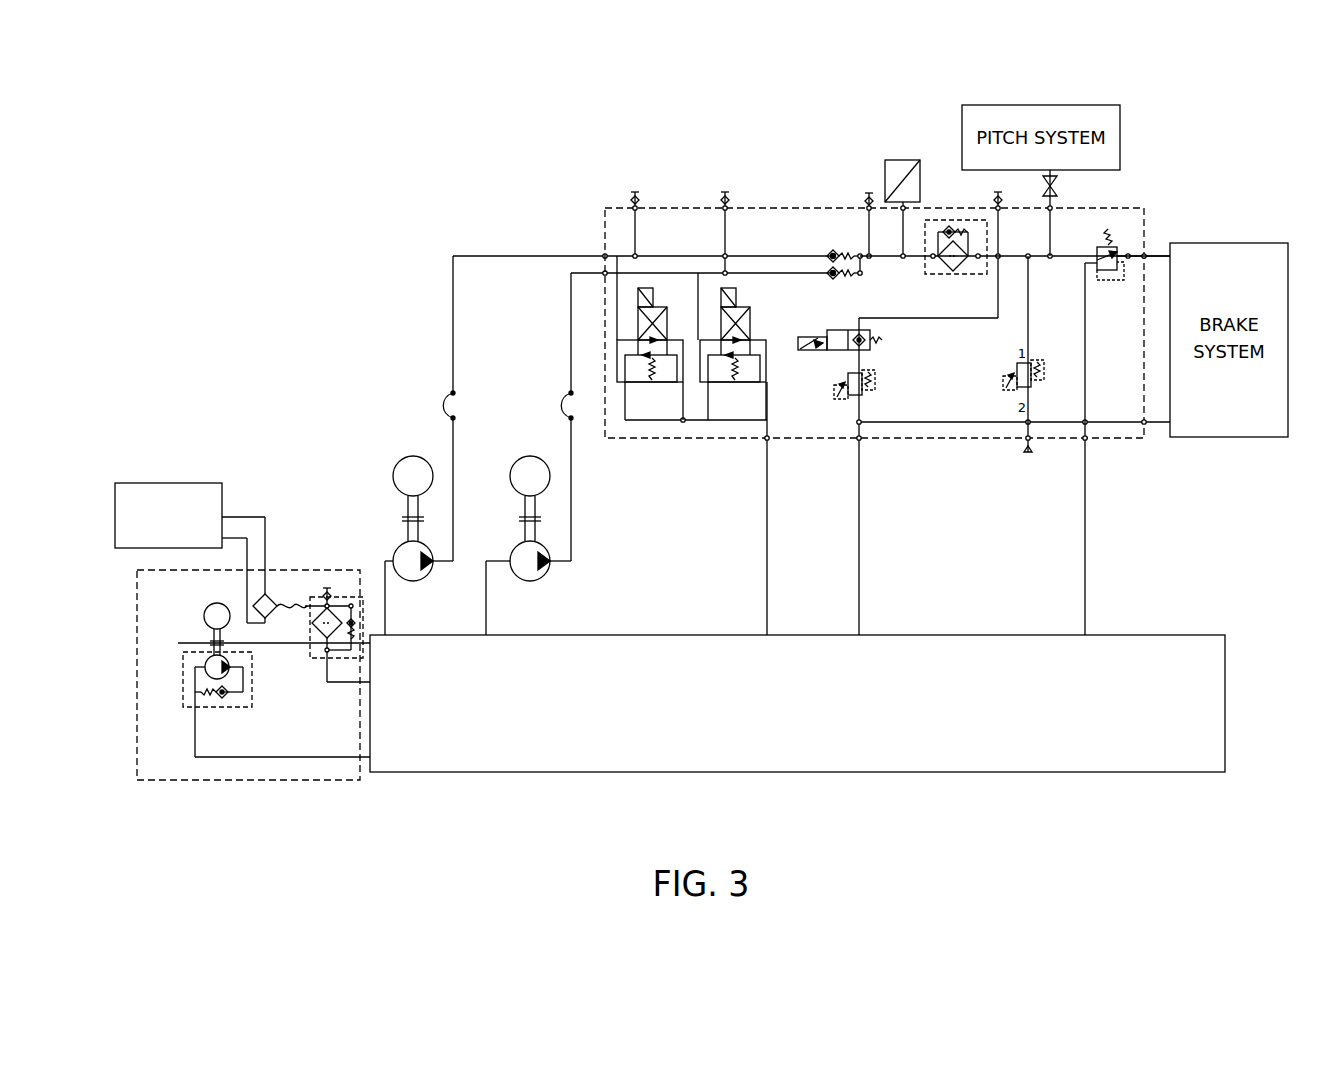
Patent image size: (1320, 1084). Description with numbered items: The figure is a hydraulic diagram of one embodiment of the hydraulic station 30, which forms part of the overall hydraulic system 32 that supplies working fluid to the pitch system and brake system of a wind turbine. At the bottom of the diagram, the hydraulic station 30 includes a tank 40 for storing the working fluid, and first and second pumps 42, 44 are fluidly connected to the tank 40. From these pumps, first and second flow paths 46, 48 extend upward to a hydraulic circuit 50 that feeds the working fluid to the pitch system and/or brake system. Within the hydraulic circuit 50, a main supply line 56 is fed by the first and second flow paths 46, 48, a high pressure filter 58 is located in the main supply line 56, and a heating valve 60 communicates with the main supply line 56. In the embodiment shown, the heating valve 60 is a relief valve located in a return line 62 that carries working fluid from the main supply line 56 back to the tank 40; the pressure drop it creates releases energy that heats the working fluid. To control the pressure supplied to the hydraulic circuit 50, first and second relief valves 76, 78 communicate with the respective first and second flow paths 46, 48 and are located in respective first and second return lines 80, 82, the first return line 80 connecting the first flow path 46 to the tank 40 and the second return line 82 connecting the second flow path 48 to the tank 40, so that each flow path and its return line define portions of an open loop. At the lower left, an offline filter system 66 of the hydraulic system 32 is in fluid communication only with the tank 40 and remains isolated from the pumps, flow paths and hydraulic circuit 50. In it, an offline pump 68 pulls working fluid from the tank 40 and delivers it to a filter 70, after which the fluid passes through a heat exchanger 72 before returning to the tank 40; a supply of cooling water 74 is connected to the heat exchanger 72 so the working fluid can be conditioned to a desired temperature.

The hydraulic station 30 is at (400, 388).
The hydraulic system 32 is at (295, 303).
The tank 40 is at (922, 635).
The first pump 42 is at (400, 548).
The second pump 44 is at (515, 548).
The first flow path 46 is at (485, 256).
The second flow path 48 is at (572, 496).
The hydraulic circuit 50 is at (1075, 243).
The main supply line 56 is at (877, 262).
The high pressure filter 58 is at (930, 218).
The heating valve 60 is at (875, 377).
The return line 62 is at (860, 525).
The offline filter system 66 is at (192, 785).
The offline pump 68 is at (205, 660).
The filter 70 is at (318, 645).
The heat exchanger 72 is at (270, 600).
The supply of cooling water 74 is at (170, 483).
The first relief valve 76 is at (637, 300).
The second relief valve 78 is at (750, 316).
The first return line 80 is at (608, 296).
The second return line 82 is at (688, 290).